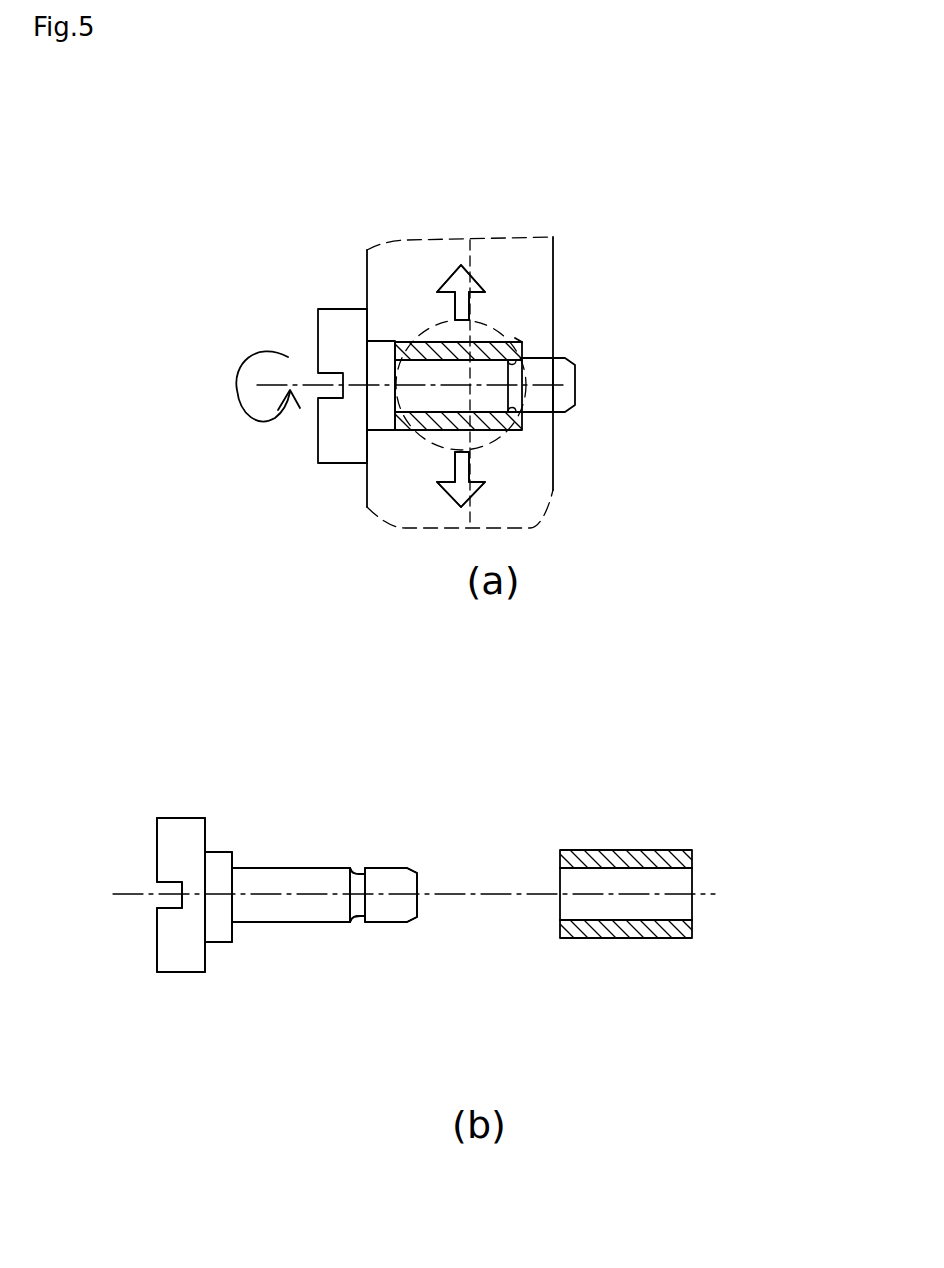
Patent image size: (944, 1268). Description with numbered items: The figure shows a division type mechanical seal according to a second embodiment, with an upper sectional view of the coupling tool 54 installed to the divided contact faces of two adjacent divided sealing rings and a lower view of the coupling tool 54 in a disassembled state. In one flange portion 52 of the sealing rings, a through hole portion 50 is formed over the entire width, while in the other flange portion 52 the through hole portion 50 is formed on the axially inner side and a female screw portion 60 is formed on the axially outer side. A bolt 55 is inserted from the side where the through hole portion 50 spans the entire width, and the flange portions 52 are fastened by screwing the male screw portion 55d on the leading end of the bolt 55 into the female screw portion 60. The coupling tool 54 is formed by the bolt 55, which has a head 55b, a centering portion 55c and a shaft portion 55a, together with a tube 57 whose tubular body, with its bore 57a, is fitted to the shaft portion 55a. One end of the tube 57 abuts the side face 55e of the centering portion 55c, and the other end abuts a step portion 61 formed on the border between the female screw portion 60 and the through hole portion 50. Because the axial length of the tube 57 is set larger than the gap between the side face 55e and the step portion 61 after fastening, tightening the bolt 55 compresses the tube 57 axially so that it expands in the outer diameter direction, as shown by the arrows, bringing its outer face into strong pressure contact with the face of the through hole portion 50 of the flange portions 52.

The through hole portion 50 is at (414, 356).
The flange portion 52 is at (392, 273).
The coupling tool 54 is at (318, 337).
The bolt 55 is at (263, 868).
The shaft portion 55a is at (343, 913).
The head portion 55b is at (180, 962).
The centering portion 55c is at (377, 417).
The male screw portion 55d is at (555, 413).
The side face 55e is at (440, 423).
The tube 57 is at (479, 432).
The bushing bore 57a is at (560, 933).
The female screw portion 60 is at (548, 365).
The step portion 61 is at (515, 338).